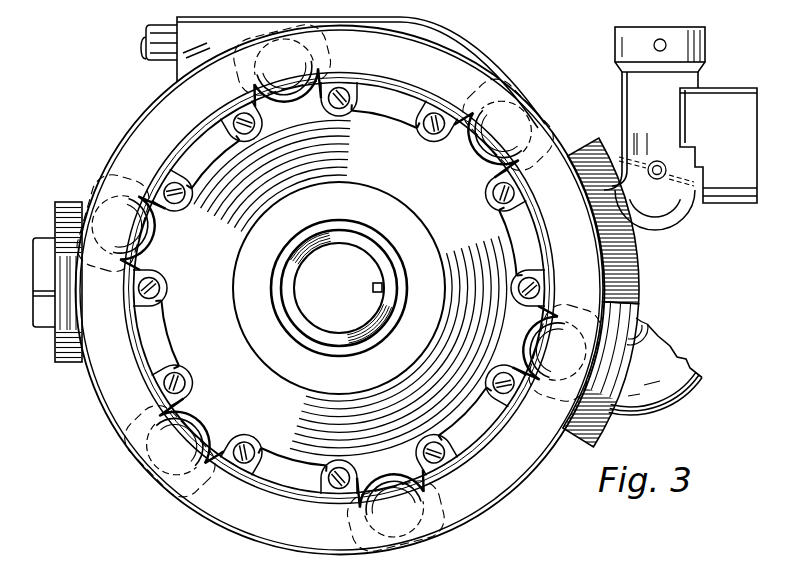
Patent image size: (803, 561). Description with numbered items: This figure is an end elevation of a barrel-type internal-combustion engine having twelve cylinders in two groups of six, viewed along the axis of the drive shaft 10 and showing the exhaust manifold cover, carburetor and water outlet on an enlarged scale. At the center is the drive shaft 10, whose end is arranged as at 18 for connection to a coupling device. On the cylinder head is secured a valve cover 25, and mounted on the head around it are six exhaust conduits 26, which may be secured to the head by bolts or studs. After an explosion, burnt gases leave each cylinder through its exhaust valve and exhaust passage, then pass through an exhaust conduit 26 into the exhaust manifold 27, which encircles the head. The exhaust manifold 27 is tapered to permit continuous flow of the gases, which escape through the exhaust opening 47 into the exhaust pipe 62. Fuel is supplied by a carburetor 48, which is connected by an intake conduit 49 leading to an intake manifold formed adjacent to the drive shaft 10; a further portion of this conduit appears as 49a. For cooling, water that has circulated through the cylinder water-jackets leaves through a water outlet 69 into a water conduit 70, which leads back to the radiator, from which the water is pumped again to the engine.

The drive shaft 10 is at (357, 307).
The coupling connection end 18 is at (382, 283).
The valve cover 25 is at (425, 198).
The exhaust conduits 26 is at (157, 263).
The exhaust manifold 27 is at (147, 123).
The exhaust opening 47 is at (58, 368).
The carburetor 48 is at (667, 113).
The intake conduit 49 is at (667, 223).
The conduit section 49a is at (650, 360).
The exhaust pipe 62 is at (52, 232).
The water outlet 69 is at (210, 40).
The water conduit 70 is at (146, 36).